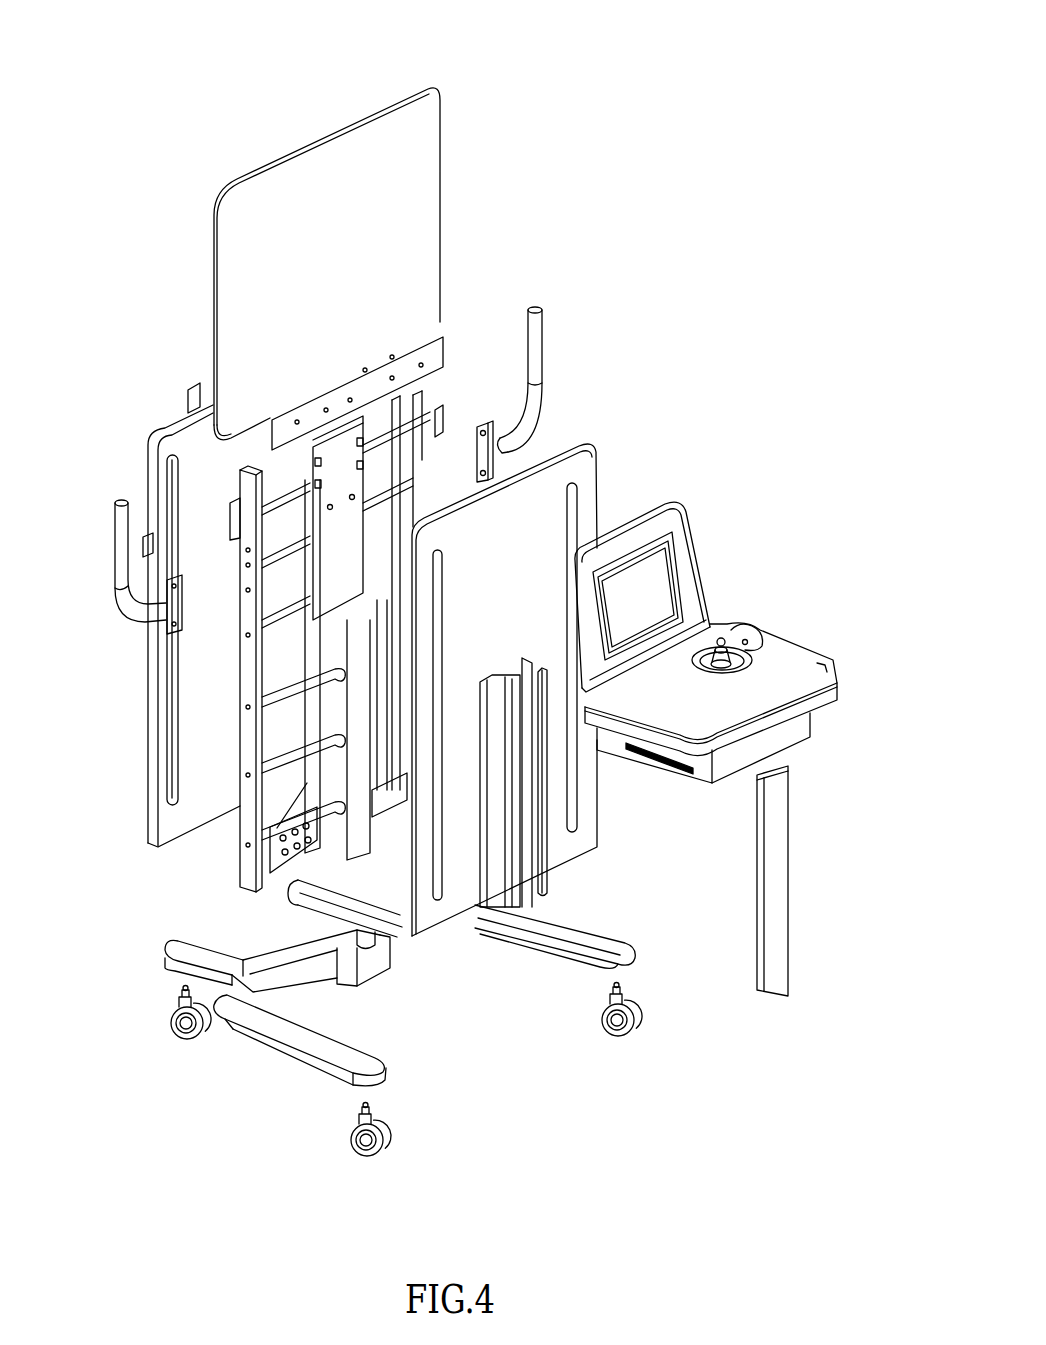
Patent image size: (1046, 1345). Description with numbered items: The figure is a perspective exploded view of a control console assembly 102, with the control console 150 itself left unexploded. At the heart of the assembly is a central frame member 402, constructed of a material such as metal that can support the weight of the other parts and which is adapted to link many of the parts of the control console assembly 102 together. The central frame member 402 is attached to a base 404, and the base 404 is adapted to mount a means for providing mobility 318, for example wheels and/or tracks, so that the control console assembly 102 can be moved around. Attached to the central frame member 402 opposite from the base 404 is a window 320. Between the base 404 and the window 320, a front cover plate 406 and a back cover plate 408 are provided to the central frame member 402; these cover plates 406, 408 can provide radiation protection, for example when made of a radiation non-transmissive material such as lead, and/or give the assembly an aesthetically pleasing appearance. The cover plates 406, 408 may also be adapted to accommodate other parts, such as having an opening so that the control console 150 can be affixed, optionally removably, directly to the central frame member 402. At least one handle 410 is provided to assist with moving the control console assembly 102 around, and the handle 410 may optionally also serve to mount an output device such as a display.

The control console assembly 102 is at (662, 46).
The window 320 is at (418, 174).
The handle 410 is at (535, 407).
The front cover plate 406 is at (147, 707).
The central frame member 402 is at (240, 833).
The back cover plate 408 is at (597, 825).
The control console 150 is at (790, 650).
The base 404 is at (293, 1053).
The means for providing mobility 318 is at (613, 1027).